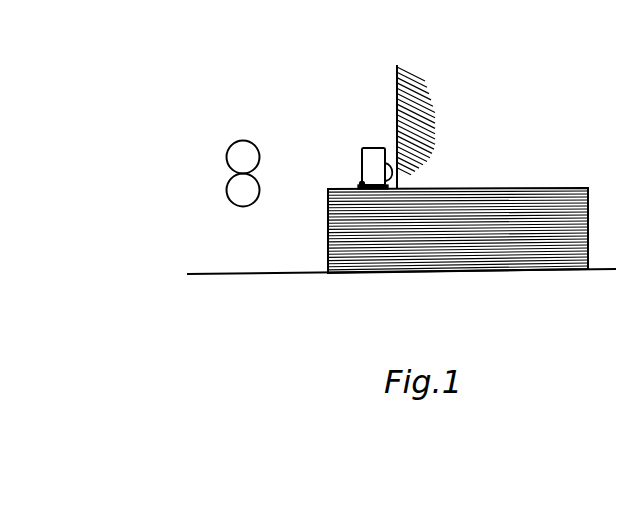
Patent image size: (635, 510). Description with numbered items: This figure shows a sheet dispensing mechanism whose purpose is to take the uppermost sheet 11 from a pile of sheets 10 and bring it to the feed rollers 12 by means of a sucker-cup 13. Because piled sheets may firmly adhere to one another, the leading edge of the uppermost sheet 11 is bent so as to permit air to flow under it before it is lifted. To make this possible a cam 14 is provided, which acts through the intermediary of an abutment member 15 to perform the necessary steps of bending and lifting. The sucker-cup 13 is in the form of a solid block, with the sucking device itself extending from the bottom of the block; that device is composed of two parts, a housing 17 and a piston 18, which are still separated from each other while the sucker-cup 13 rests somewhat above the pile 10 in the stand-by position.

The pile of sheets 10 is at (560, 225).
The uppermost sheet 11 is at (491, 189).
The feed rollers 12 is at (233, 186).
The sucker-cup 13 is at (364, 153).
The cam 14 is at (394, 172).
The abutment member 15 is at (405, 142).
The housing 17 is at (360, 183).
The piston 18 is at (358, 187).